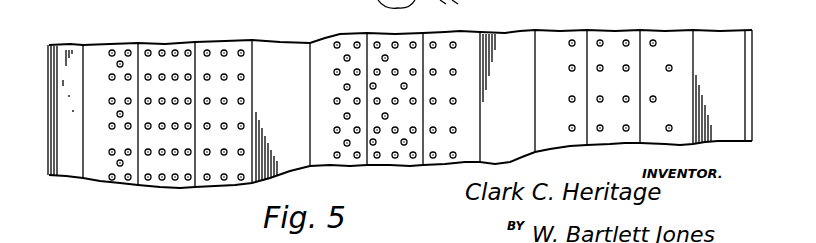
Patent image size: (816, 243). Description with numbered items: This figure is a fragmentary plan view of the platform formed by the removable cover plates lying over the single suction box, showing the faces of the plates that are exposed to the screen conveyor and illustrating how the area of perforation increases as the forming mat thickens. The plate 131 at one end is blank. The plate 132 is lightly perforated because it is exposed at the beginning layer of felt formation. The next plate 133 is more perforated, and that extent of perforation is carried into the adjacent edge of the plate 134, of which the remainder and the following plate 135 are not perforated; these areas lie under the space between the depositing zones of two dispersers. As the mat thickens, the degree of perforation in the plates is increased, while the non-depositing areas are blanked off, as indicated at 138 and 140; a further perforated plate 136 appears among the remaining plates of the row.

The plate 131 is at (720, 42).
The plate 132 is at (669, 40).
The plate 133 is at (613, 37).
The plate 134 is at (558, 40).
The plate 135 is at (510, 46).
The perforated panel section 136 is at (214, 91).
The blanked-off area 138 is at (280, 52).
The blanked-off area 140 is at (70, 48).